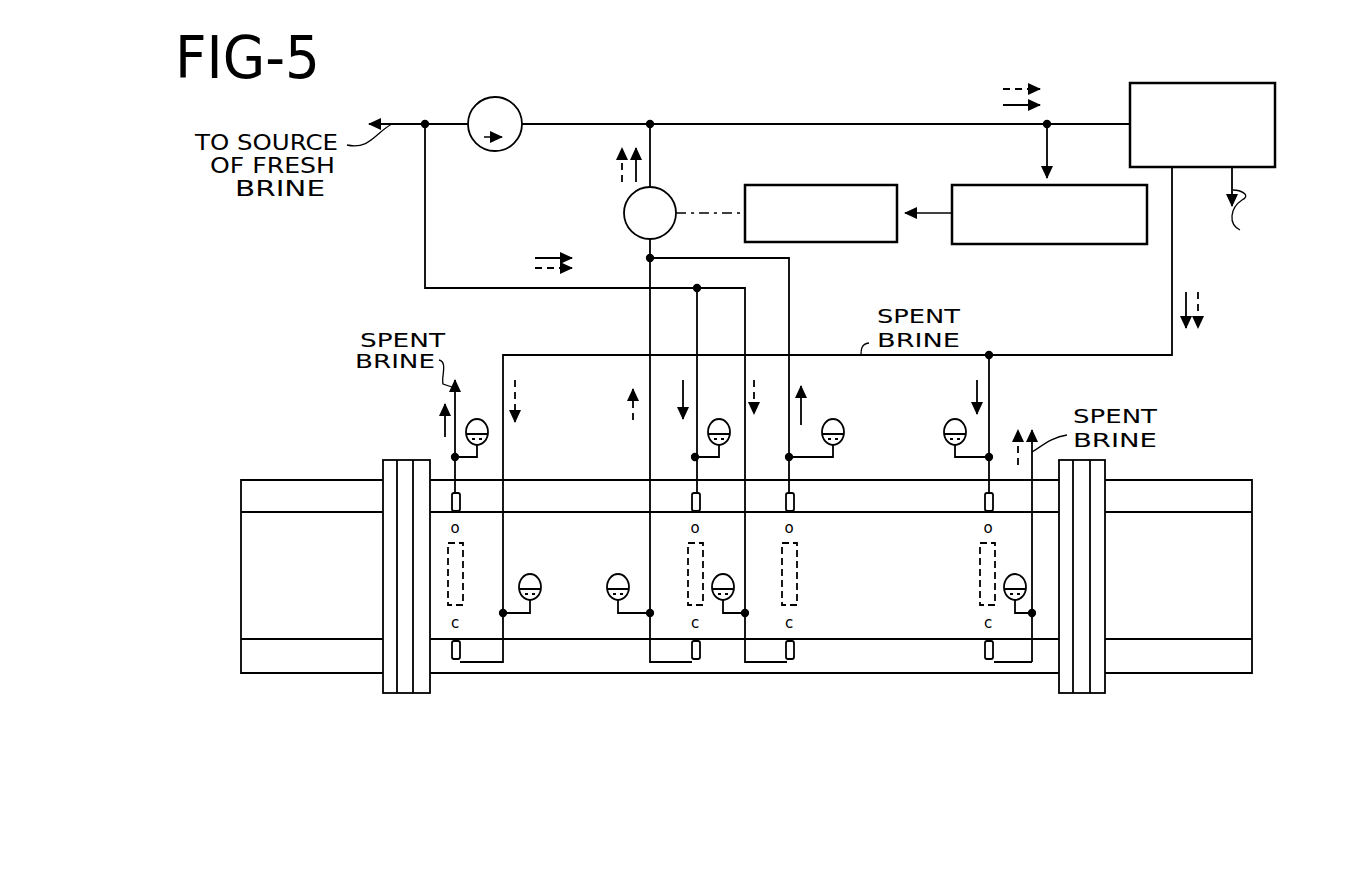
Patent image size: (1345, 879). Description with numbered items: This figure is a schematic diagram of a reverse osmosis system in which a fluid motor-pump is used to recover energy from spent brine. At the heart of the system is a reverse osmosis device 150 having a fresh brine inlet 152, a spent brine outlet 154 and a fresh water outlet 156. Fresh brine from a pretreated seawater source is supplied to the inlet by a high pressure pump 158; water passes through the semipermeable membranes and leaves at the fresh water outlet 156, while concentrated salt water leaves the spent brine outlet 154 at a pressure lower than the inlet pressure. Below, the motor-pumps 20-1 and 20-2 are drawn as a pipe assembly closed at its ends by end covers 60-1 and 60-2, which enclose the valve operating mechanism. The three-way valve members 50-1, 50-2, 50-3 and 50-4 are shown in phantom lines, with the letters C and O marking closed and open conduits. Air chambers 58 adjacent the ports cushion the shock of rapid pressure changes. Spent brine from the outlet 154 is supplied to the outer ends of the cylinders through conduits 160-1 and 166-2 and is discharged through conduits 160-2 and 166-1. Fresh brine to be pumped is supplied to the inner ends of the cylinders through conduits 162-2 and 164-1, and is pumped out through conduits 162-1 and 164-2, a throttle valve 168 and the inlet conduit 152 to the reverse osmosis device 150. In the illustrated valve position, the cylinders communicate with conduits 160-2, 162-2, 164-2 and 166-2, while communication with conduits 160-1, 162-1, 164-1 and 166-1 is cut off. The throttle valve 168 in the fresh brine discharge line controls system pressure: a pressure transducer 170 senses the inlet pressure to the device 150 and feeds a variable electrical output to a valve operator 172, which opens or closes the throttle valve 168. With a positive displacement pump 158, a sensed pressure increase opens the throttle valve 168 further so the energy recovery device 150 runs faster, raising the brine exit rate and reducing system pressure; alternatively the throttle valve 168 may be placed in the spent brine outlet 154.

The reverse osmosis device 150 is at (1140, 83).
The fresh brine inlet 152 is at (862, 124).
The spent brine outlet 154 is at (1172, 258).
The fresh water outlet 156 is at (1232, 196).
The high pressure pump 158 is at (512, 104).
The throttle valve 168 is at (624, 213).
The pressure transducer 170 is at (970, 185).
The valve operator 172 is at (786, 185).
The conduit 160-1 is at (448, 651).
The conduit 160-2 is at (461, 501).
The conduit 162-1 is at (702, 653).
The conduit 162-2 is at (692, 501).
The conduit 164-1 is at (797, 653).
The conduit 164-2 is at (795, 501).
The conduit 166-1 is at (986, 651).
The conduit 166-2 is at (985, 501).
The valve member 50-1 is at (468, 561).
The valve member 50-2 is at (686, 556).
The valve member 50-3 is at (798, 566).
The valve member 50-4 is at (979, 560).
The air chamber 58 is at (470, 419).
The end cover 60-1 is at (241, 575).
The end cover 60-2 is at (1253, 591).
The motor-pump 20-1 is at (566, 682).
The motor-pump 20-2 is at (924, 684).